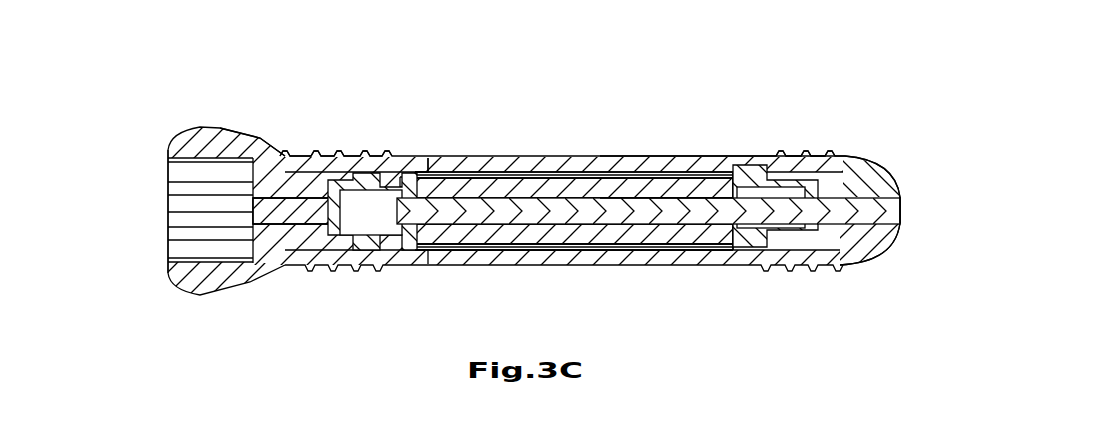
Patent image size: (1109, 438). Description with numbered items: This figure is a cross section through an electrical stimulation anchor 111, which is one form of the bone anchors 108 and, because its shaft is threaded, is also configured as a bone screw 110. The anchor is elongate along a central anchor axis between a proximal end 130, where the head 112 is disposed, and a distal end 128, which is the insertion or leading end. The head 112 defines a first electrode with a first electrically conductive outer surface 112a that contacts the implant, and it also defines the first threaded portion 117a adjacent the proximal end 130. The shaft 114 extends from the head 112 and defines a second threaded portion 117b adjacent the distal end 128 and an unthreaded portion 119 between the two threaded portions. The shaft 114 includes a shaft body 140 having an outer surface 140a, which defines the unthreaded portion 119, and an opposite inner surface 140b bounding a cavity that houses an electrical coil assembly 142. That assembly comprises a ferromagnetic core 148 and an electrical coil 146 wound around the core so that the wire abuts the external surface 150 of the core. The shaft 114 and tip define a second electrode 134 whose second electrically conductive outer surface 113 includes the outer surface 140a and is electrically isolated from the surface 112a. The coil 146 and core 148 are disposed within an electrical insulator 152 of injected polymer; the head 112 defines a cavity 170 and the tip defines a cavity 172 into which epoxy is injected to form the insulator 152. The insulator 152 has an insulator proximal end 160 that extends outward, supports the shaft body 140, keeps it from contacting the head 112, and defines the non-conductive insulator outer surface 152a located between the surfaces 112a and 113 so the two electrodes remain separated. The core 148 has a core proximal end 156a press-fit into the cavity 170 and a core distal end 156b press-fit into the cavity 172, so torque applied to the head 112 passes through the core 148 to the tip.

The bone anchor 108 is at (526, 183).
The bone screw 110 is at (526, 183).
The electrical stimulation anchor 111 is at (526, 183).
The head 112 is at (220, 130).
The first electrically conductive outer surface 112a is at (265, 138).
The second electrically conductive outer surface 113 is at (490, 263).
The shaft 114 is at (650, 153).
The first threaded portion 117a is at (338, 150).
The second threaded portion 117b is at (818, 150).
The unthreaded portion 119 is at (685, 178).
The distal end 128 is at (898, 228).
The proximal end 130 is at (168, 150).
The second electrode 134 is at (617, 163).
The shaft body 140 is at (613, 210).
The outer surface 140a is at (470, 155).
The inner surface 140b is at (755, 163).
The electrical coil assembly 142 is at (483, 240).
The electrical coil 146 is at (658, 230).
The ferromagnetic core 148 is at (597, 212).
The external surface 150 is at (547, 195).
The electrical insulator 152 is at (423, 172).
The insulator outer surface 152a is at (418, 172).
The core proximal end 156a is at (347, 245).
The core distal end 156b is at (773, 213).
The insulator proximal end 160 is at (417, 243).
The cavity 170 is at (253, 213).
The cavity 172 is at (900, 215).